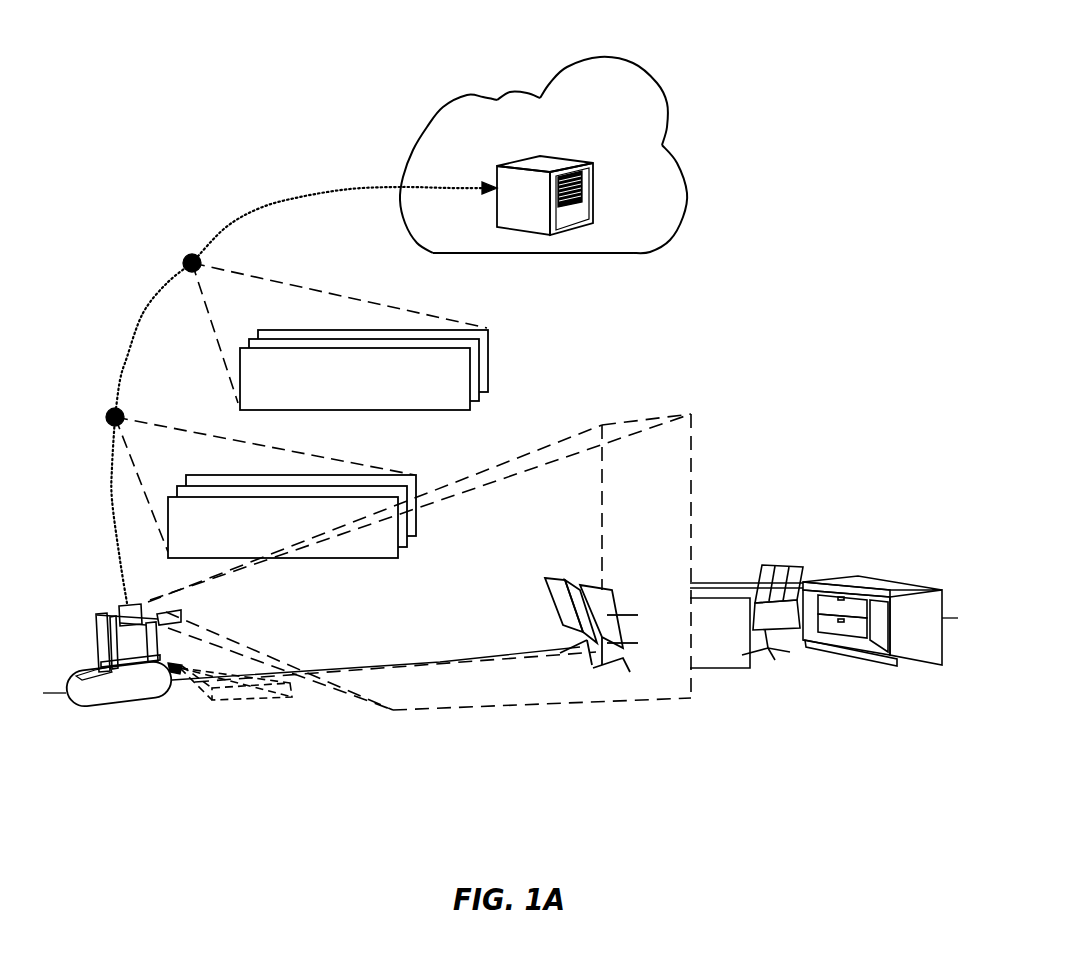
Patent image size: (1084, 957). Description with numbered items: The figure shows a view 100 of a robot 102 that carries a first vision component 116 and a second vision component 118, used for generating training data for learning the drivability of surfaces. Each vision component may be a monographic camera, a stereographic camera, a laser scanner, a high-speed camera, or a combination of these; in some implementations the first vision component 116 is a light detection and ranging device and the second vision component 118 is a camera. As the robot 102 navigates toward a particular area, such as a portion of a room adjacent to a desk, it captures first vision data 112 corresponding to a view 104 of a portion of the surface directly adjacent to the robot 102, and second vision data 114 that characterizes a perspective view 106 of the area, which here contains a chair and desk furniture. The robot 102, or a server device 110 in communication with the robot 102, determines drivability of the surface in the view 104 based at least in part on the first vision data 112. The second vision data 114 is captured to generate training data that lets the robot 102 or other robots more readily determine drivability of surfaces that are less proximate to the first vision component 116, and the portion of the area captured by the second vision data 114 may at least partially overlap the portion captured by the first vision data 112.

The view 100 is at (203, 93).
The robot 102 is at (133, 705).
The view 104 is at (242, 703).
The perspective view 106 is at (660, 594).
The server device 110 is at (541, 209).
The first vision data 112 is at (339, 401).
The second vision data 114 is at (267, 548).
The first vision component 116 is at (176, 660).
The second vision component 118 is at (124, 604).